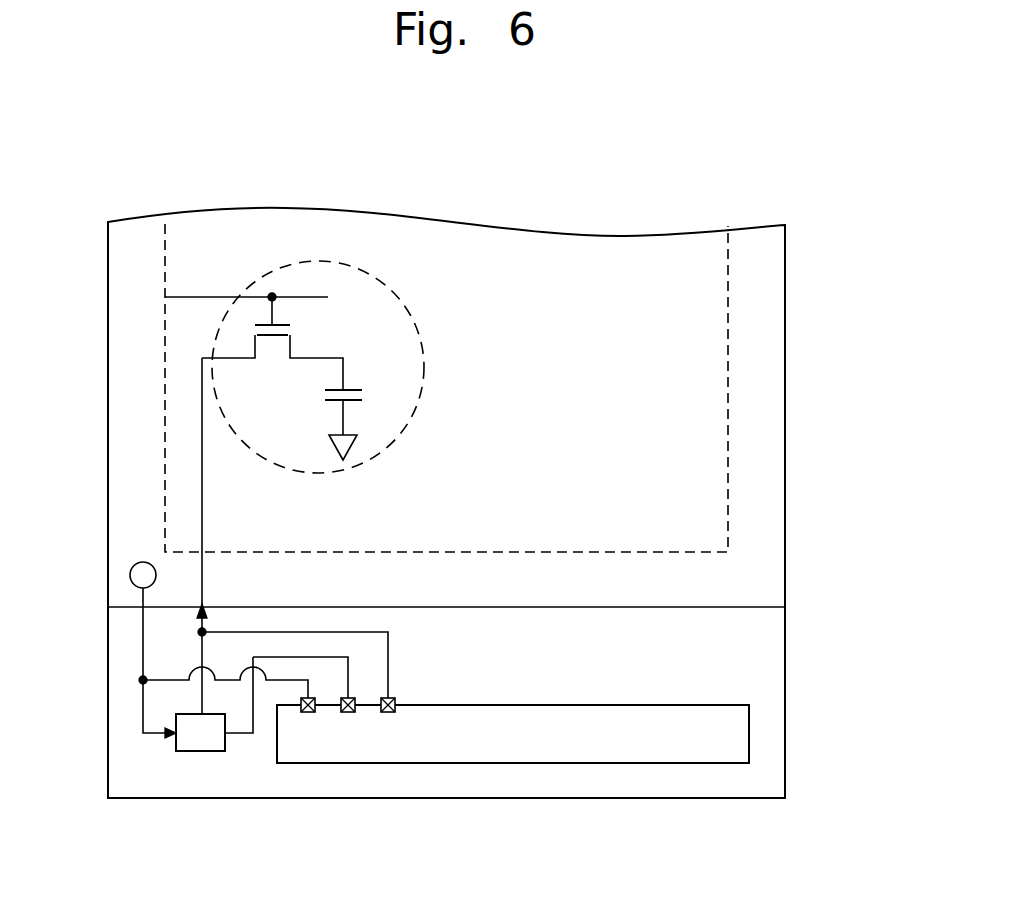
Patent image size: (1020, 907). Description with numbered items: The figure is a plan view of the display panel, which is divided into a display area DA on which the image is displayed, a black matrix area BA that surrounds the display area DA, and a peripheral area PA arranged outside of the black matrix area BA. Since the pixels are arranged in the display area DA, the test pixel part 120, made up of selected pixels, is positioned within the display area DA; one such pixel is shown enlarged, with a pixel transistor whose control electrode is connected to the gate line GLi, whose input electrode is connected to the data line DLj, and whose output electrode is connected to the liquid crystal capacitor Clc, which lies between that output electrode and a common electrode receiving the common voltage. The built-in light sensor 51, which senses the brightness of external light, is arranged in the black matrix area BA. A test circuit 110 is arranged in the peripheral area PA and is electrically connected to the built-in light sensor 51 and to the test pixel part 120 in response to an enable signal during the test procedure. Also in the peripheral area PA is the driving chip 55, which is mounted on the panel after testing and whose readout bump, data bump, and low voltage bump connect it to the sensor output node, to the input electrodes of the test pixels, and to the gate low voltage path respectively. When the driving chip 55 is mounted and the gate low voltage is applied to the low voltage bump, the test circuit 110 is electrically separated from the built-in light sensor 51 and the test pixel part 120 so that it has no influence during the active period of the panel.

The test pixel part 120 is at (294, 306).
The built-in light sensor 51 is at (128, 577).
The test circuit 110 is at (198, 752).
The driving chip 55 is at (749, 735).
The display area DA is at (686, 348).
The black matrix area BA is at (760, 447).
The peripheral area PA is at (751, 643).
The gate line GLi is at (264, 297).
The data line DLj is at (205, 500).
The liquid crystal capacitor Clc is at (359, 422).